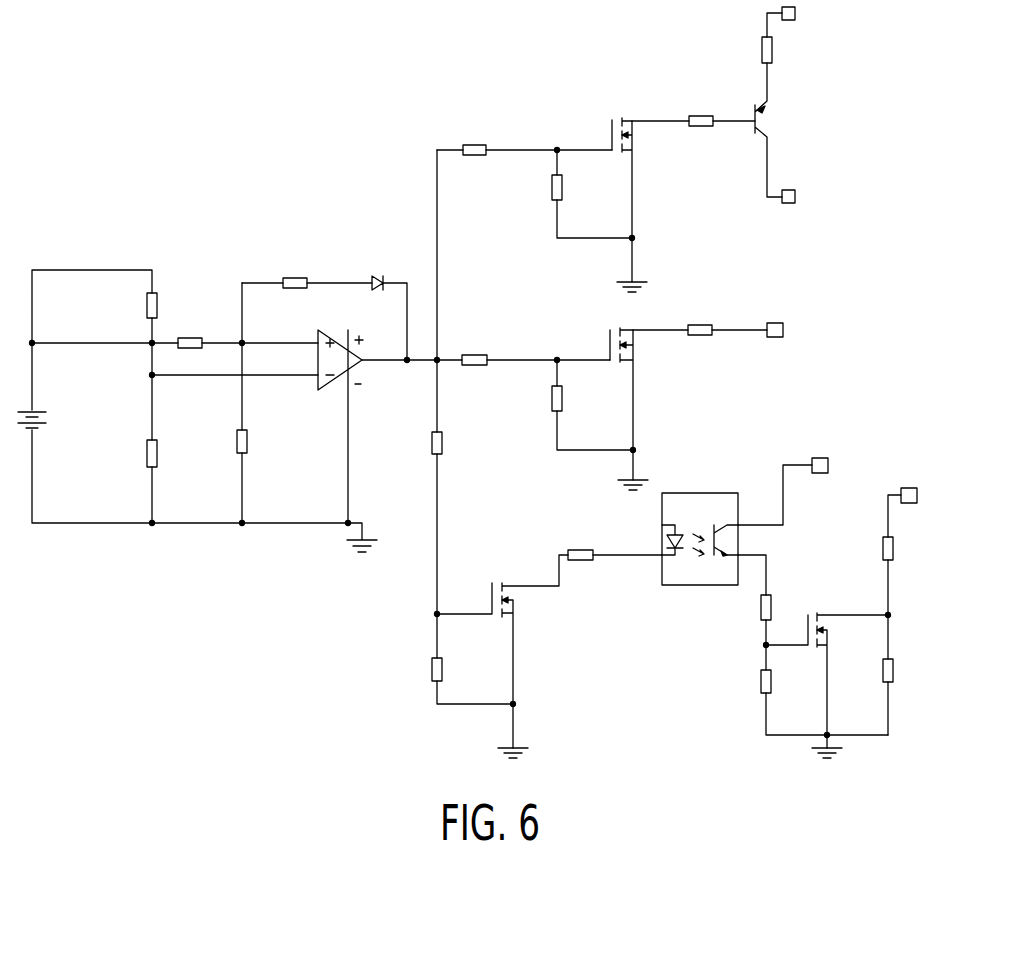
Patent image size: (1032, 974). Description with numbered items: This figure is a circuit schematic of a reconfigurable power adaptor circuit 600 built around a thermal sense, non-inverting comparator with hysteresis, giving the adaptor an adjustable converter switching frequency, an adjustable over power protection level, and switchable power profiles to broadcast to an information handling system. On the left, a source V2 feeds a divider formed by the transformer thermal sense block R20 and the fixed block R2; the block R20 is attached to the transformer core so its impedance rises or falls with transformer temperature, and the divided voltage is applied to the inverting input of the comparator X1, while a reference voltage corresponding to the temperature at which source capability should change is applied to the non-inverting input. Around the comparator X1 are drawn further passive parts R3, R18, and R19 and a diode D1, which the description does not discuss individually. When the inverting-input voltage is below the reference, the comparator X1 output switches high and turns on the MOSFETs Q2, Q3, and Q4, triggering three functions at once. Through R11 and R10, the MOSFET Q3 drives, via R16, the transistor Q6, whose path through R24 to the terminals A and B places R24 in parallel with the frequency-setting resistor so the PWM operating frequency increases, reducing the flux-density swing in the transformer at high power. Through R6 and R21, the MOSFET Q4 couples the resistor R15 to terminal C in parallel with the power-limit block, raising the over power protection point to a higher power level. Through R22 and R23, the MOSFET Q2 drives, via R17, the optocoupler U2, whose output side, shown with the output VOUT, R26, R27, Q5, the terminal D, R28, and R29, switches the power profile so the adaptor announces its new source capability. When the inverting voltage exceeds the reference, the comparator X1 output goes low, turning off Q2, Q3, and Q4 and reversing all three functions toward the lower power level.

The power adaptor circuit 600 is at (128, 192).
The voltage source V2 is at (46, 416).
The transformer thermal sense block R20 is at (171, 299).
The block R2 is at (166, 446).
The resistor R3 is at (204, 330).
The feedback resistor R18 is at (287, 299).
The resistor R19 is at (261, 436).
The diode D1 is at (370, 270).
The comparator X1 is at (340, 406).
The resistor R11 is at (476, 135).
The resistor R10 is at (576, 190).
The MOSFET Q3 is at (618, 200).
The resistor R16 is at (693, 141).
The transistor Q6 is at (777, 130).
The resistor R24 is at (786, 39).
The terminal A is at (800, 15).
The terminal B is at (800, 198).
The resistor R6 is at (474, 345).
The resistor R21 is at (576, 403).
The MOSFET Q4 is at (619, 404).
The resistor R15 is at (700, 348).
The terminal C is at (789, 332).
The resistor R22 is at (457, 440).
The MOSFET Q2 is at (502, 651).
The resistor R23 is at (457, 677).
The resistor R17 is at (615, 573).
The optocoupler U2 is at (716, 539).
The output voltage terminal VOUT is at (811, 487).
The resistor R26 is at (774, 612).
The resistor R27 is at (824, 702).
The MOSFET transistor Q5 is at (827, 680).
The terminal D is at (912, 508).
The resistor R28 is at (906, 595).
The resistor R29 is at (906, 695).